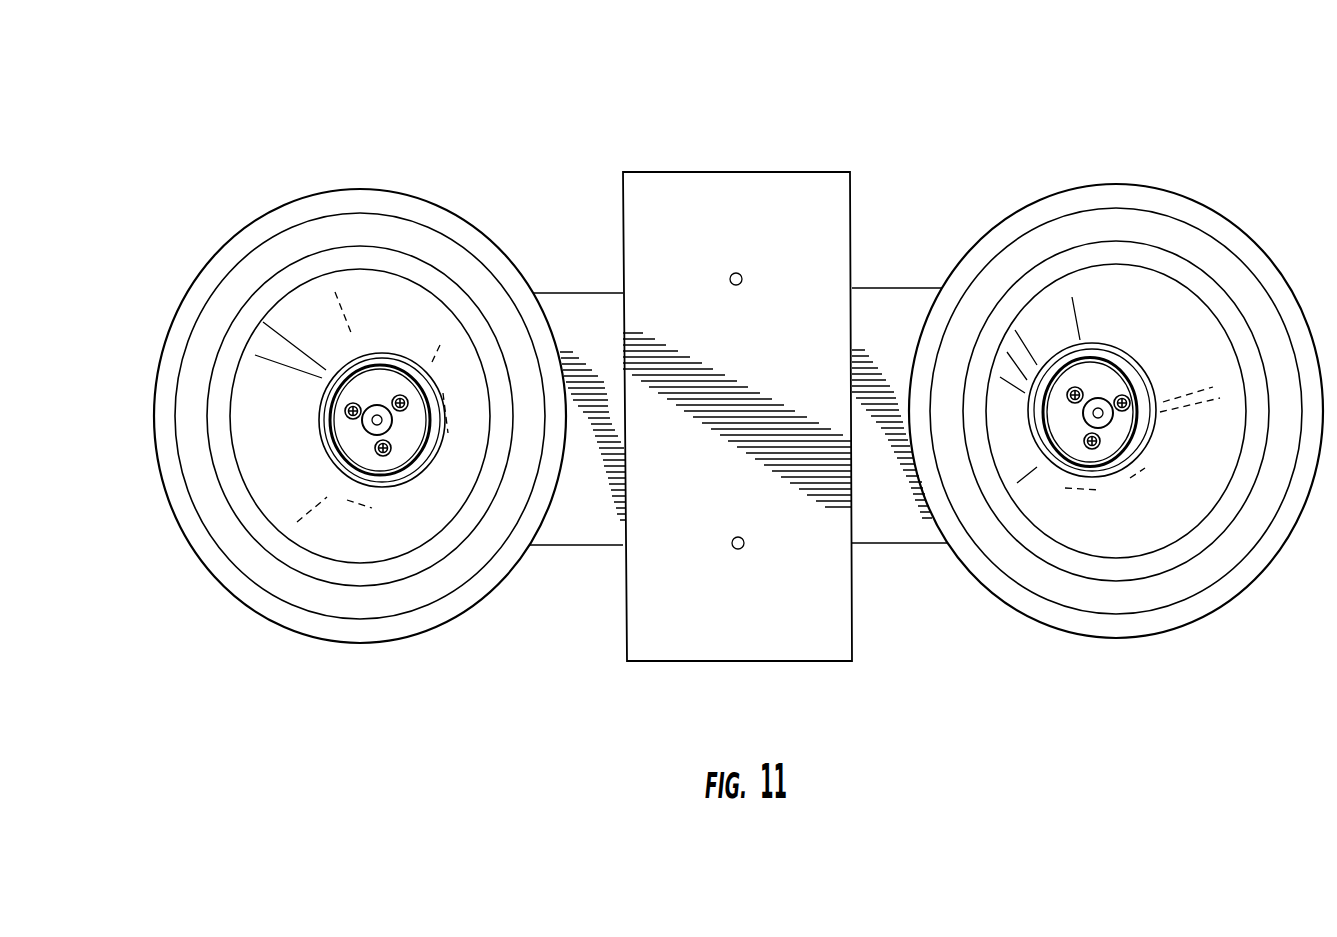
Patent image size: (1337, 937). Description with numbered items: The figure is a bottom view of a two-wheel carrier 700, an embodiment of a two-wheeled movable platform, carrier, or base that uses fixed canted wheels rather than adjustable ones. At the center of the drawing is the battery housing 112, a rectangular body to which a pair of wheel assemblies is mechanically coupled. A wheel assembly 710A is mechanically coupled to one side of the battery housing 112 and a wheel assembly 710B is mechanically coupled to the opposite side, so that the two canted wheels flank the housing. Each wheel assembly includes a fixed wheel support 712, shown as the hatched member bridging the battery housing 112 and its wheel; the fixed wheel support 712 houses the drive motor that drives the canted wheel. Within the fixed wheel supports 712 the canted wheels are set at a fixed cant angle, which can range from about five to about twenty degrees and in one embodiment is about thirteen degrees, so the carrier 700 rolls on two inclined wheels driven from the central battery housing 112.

The two-wheel carrier 700 is at (412, 77).
The wheel assembly 710A is at (1123, 155).
The wheel assembly 710B is at (298, 167).
The fixed wheel support 712 is at (906, 288).
The battery housing 112 is at (780, 662).